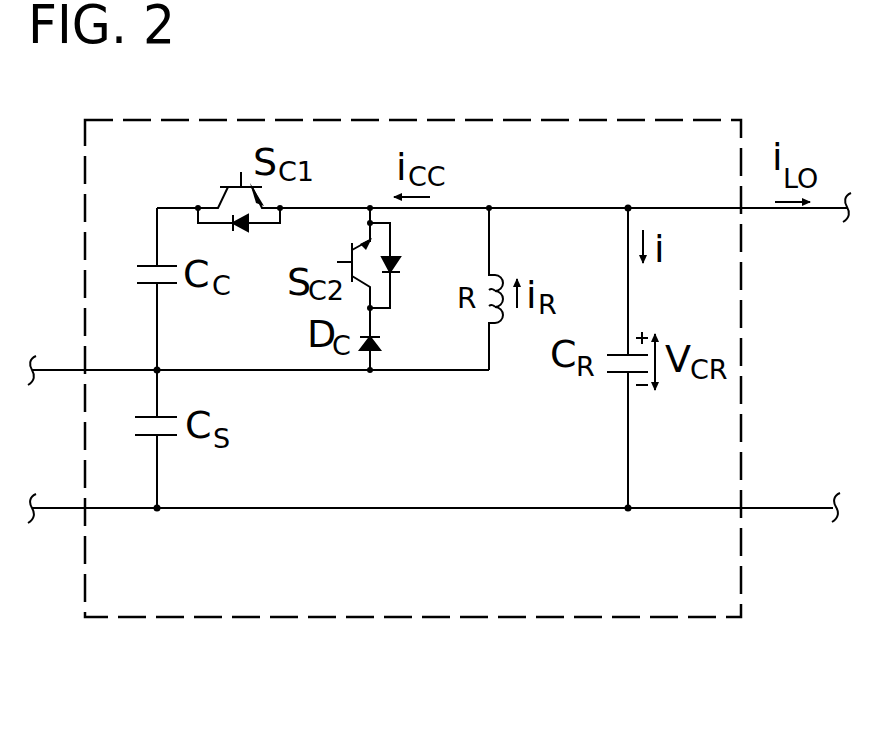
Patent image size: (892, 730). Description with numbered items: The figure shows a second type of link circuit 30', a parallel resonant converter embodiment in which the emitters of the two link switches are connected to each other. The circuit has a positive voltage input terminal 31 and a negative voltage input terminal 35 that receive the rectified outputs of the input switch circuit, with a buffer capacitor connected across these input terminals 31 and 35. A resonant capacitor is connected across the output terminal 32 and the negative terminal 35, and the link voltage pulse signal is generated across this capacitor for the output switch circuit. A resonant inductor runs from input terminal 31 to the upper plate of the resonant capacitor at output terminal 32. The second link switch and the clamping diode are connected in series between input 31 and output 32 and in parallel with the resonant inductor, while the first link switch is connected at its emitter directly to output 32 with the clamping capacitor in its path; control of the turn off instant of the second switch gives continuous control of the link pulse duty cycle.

The link circuit 30' is at (413, 346).
The positive voltage input terminal 31 is at (156, 370).
The output terminal 32 is at (628, 208).
The negative voltage input terminal 35 is at (157, 508).